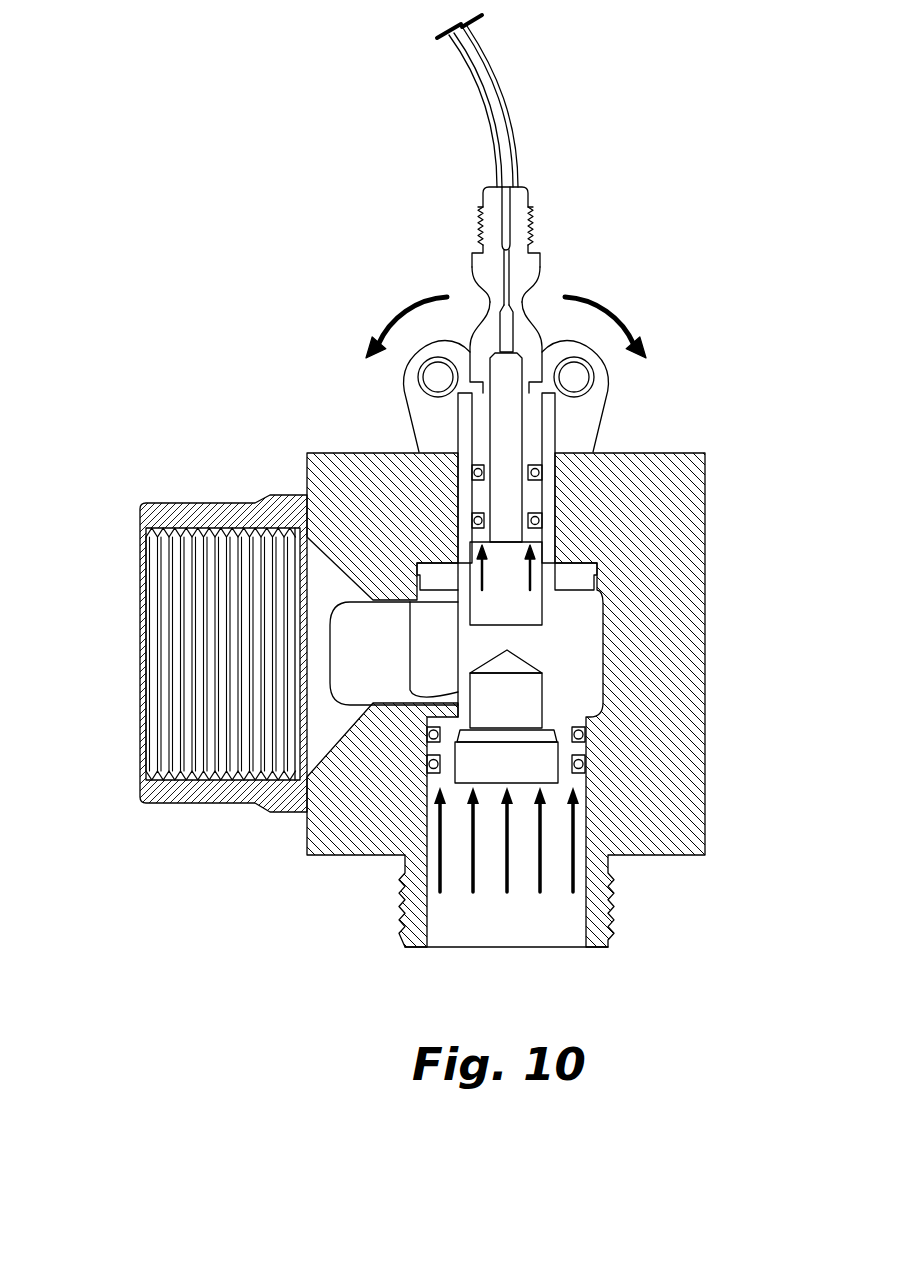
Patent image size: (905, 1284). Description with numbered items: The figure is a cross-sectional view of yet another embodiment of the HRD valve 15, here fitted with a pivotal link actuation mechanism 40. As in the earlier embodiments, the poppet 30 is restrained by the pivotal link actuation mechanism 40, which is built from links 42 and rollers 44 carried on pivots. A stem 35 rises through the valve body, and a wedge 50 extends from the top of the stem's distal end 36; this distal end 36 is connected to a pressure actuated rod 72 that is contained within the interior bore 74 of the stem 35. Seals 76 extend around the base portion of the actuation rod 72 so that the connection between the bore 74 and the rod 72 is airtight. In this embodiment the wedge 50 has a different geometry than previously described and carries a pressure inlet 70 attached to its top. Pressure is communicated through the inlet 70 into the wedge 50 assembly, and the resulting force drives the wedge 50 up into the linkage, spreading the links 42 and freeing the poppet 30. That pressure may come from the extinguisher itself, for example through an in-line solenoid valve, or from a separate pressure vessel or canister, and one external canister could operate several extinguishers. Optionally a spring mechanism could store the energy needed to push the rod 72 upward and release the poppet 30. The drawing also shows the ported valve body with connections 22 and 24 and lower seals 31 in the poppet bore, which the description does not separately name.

The HRD valve 15 is at (292, 394).
The inlet port 22 is at (517, 957).
The outlet port 24 is at (140, 637).
The poppet 30 is at (575, 658).
The lower seals 31 is at (585, 722).
The stem 35 is at (558, 545).
The distal end 36 is at (460, 277).
The pivotal link actuation mechanism 40 is at (694, 306).
The links 42 is at (602, 421).
The rollers 44 is at (582, 377).
The wedge 50 is at (545, 293).
The pressure inlet 70 is at (514, 186).
The pressure actuated rod 72 is at (490, 432).
The interior bore 74 is at (527, 608).
The seals 76 is at (542, 468).